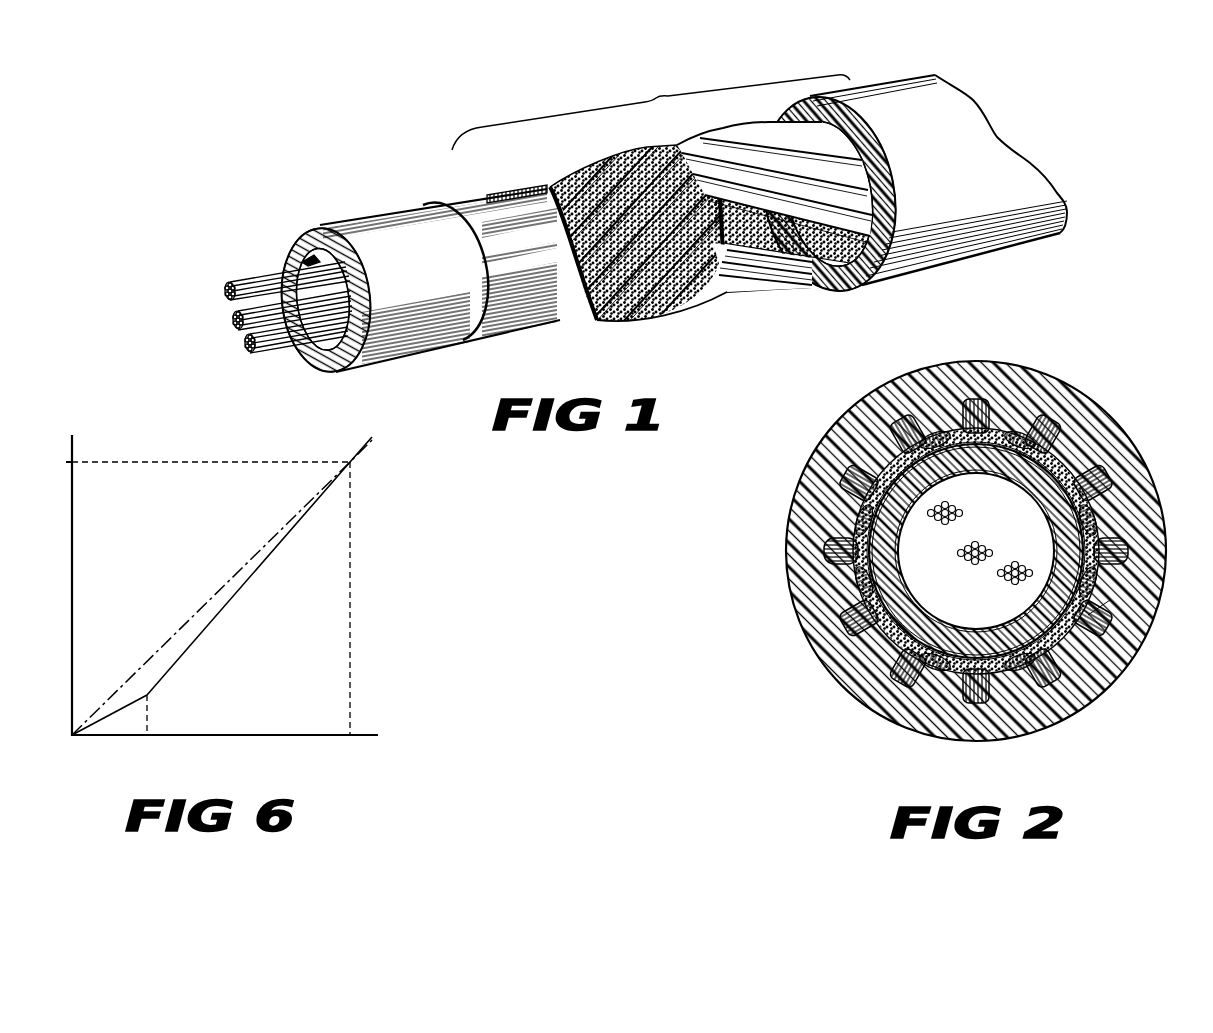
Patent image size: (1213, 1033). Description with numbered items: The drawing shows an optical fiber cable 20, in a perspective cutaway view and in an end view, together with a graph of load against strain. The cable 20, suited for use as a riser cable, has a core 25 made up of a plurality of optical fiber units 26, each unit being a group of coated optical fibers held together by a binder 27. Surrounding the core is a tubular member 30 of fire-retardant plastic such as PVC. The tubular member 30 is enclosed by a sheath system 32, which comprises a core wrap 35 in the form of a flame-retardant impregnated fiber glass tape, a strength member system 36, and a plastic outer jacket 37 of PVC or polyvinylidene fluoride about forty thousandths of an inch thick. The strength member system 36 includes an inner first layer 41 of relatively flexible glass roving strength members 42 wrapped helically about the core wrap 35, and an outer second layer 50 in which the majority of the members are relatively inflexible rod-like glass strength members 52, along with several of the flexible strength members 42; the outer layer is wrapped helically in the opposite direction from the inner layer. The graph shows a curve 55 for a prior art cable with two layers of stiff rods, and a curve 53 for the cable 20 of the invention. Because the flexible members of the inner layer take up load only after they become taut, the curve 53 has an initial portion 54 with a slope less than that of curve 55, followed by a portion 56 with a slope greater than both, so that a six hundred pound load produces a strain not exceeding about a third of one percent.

In FIG. 1, the cable 20 is at (440, 130).
In FIG. 2, the cable 20 is at (925, 360).
In FIG. 1, the core 25 is at (272, 378).
In FIG. 2, the core 25 is at (1060, 516).
In FIG. 1, the optical fiber units 26 is at (238, 300).
In FIG. 2, the optical fiber units 26 is at (1006, 570).
In FIG. 1, the binder 27 is at (360, 259).
In FIG. 1, the tubular member 30 is at (358, 225).
In FIG. 2, the tubular member 30 is at (970, 472).
In FIG. 1, the sheath system 32 is at (656, 100).
In FIG. 1, the core wrap 35 is at (493, 322).
In FIG. 2, the core wrap 35 is at (947, 652).
In FIG. 1, the strength member system 36 is at (671, 305).
In FIG. 2, the strength member system 36 is at (880, 640).
In FIG. 1, the plastic outer jacket 37 is at (828, 283).
In FIG. 2, the plastic outer jacket 37 is at (985, 375).
In FIG. 1, the inner first layer 41 is at (606, 314).
In FIG. 2, the inner first layer 41 is at (904, 596).
In FIG. 1, the strength members 42 is at (553, 160).
In FIG. 2, the strength members 42 is at (1047, 527).
In FIG. 1, the outer second layer 50 is at (733, 300).
In FIG. 2, the outer second layer 50 is at (1105, 605).
In FIG. 1, the strength members 52 is at (862, 178).
In FIG. 2, the strength members 52 is at (1090, 478).
In FIG. 6, the curve 53 is at (262, 598).
In FIG. 6, the portion 54 is at (118, 706).
In FIG. 6, the curve 55 is at (178, 632).
In FIG. 6, the portion 56 is at (198, 636).